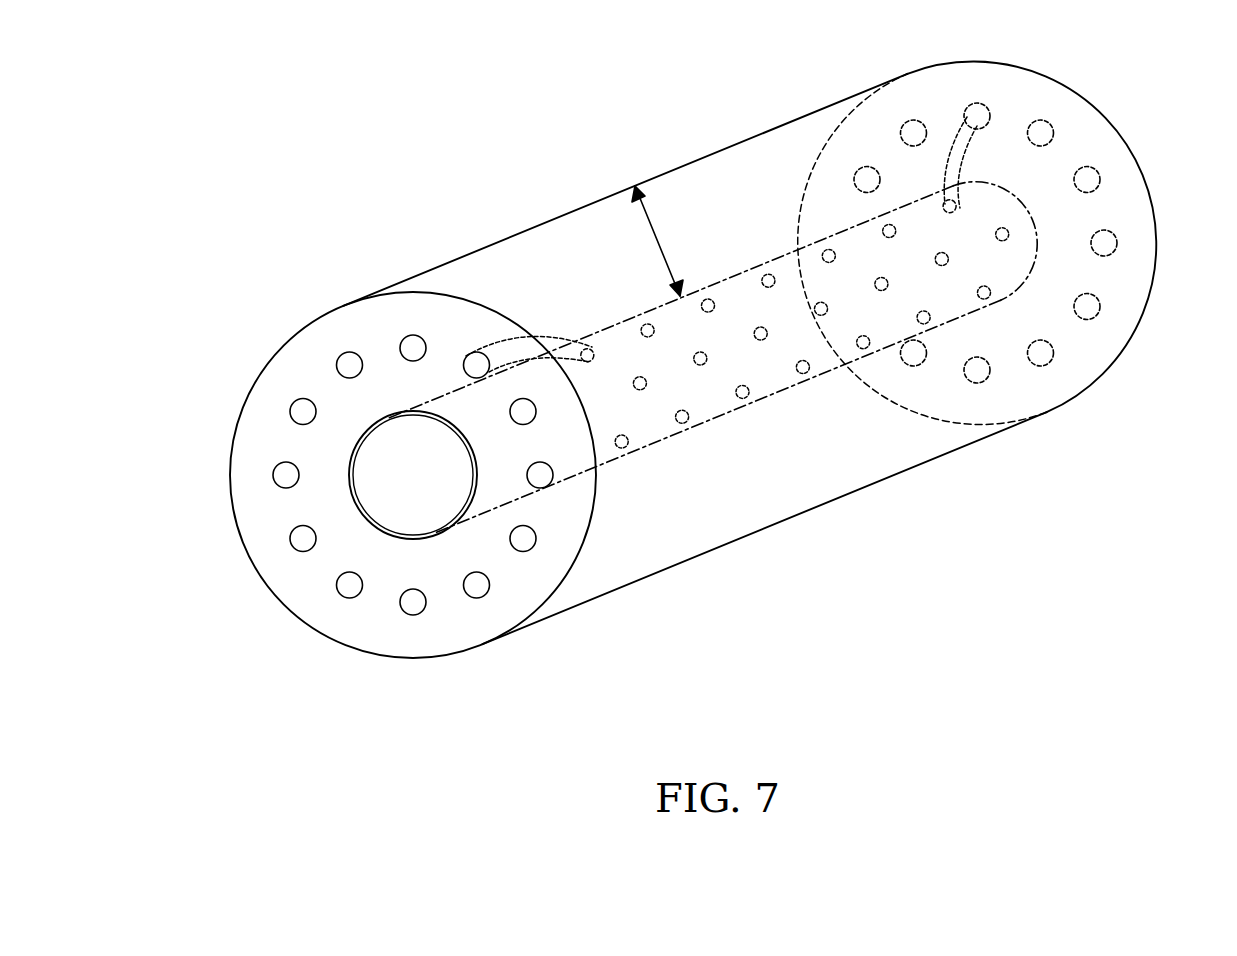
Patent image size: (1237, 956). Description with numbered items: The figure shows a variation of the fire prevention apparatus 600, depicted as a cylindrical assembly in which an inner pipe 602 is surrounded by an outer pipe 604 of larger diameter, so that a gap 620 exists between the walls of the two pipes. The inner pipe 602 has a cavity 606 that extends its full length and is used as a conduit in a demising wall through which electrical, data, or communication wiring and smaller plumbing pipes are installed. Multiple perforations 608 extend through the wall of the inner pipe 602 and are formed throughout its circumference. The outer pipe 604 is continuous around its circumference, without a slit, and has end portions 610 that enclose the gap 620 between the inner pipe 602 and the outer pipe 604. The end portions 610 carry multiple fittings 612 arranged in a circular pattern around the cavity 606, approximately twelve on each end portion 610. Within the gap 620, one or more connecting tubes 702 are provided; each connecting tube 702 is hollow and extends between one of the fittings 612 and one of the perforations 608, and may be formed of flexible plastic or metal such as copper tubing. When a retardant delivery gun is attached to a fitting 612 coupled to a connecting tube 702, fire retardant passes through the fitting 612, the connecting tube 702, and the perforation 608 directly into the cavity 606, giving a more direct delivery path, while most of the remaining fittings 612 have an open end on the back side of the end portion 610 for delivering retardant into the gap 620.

The fire prevention apparatus 600 is at (453, 127).
The inner pipe 602 is at (660, 440).
The outer pipe 604 is at (798, 513).
The cavity 606 is at (437, 488).
The perforations 608 is at (806, 375).
The end portions 610 is at (1160, 232).
The fittings 612 is at (1043, 122).
The gap 620 is at (671, 241).
The connecting tubes 702 is at (548, 342).